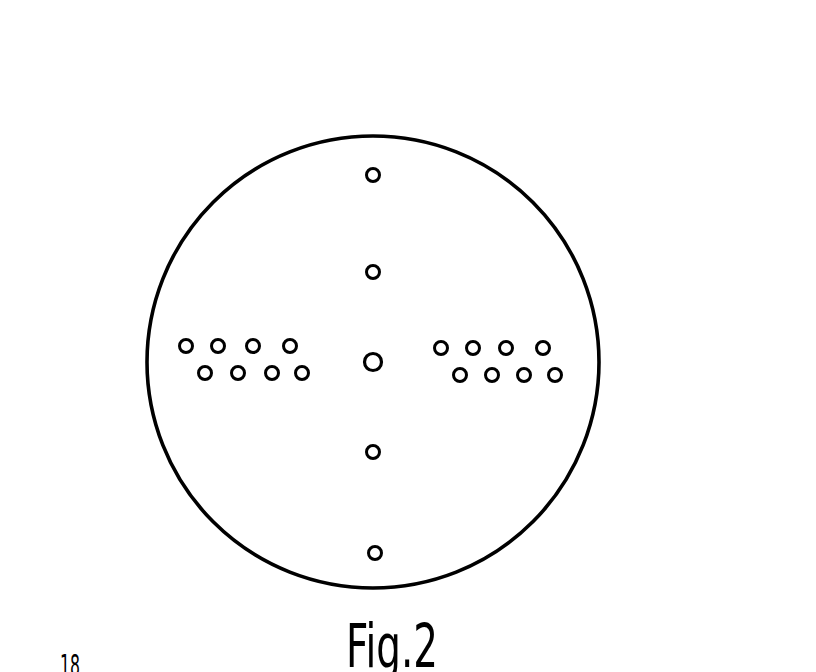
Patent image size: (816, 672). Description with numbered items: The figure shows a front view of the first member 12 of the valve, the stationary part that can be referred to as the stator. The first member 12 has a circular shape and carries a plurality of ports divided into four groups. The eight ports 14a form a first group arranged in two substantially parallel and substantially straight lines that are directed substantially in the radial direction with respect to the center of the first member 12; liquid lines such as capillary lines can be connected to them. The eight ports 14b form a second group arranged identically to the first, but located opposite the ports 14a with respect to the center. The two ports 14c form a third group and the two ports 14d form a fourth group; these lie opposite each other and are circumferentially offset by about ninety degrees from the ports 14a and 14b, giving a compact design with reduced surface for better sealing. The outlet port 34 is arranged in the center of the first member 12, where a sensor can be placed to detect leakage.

The first member 12 is at (567, 176).
The outlet port 34 is at (369, 357).
The ports 14a is at (198, 373).
The ports 14b is at (546, 342).
The ports 14c is at (379, 169).
The ports 14d is at (367, 556).